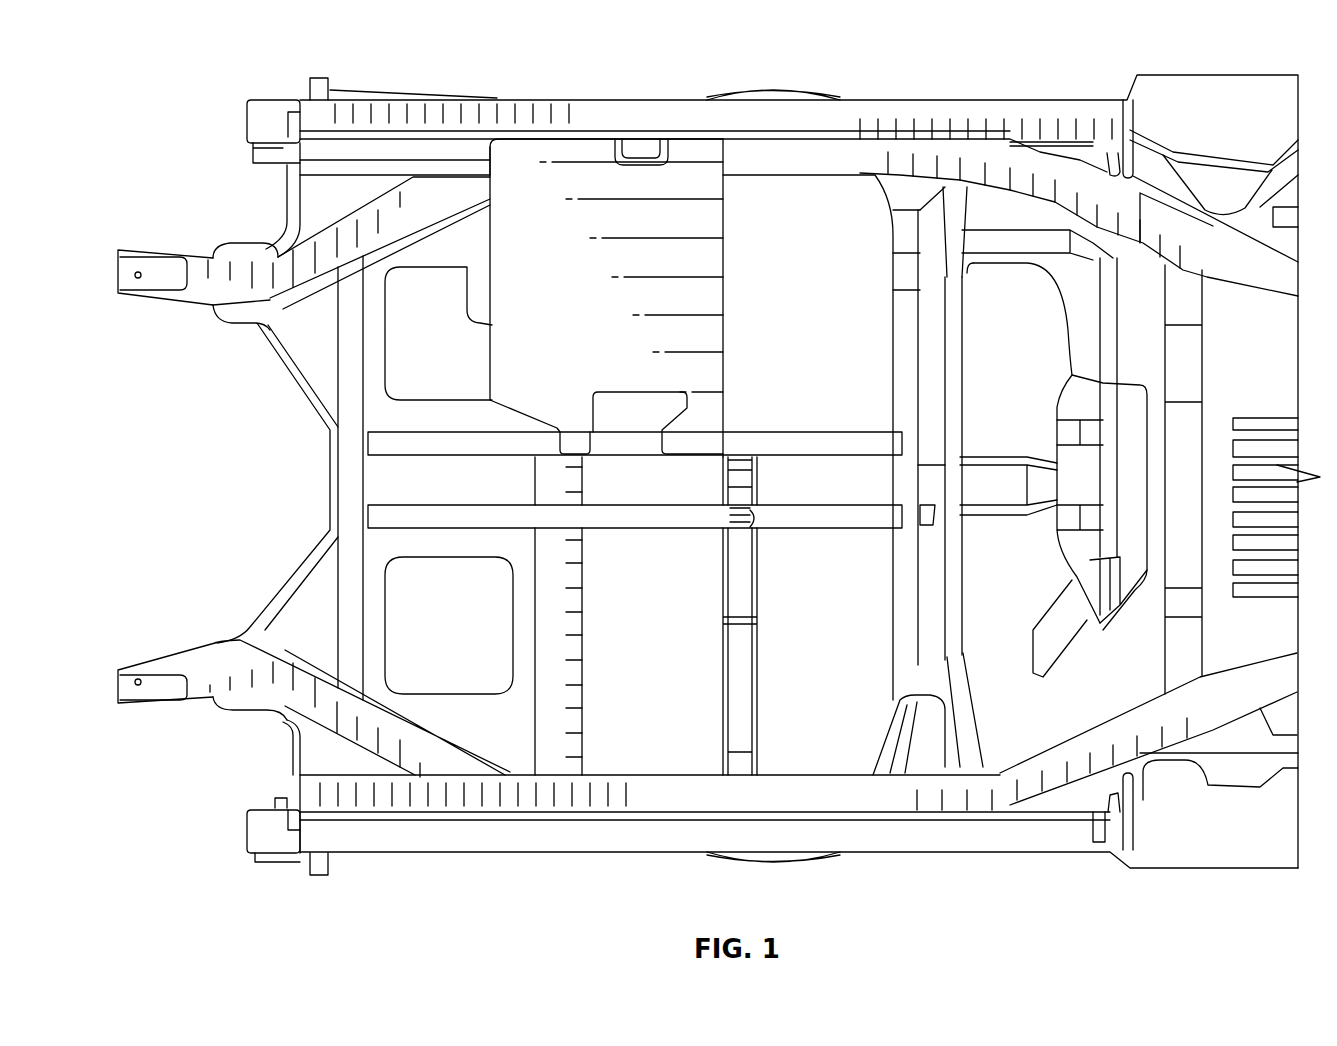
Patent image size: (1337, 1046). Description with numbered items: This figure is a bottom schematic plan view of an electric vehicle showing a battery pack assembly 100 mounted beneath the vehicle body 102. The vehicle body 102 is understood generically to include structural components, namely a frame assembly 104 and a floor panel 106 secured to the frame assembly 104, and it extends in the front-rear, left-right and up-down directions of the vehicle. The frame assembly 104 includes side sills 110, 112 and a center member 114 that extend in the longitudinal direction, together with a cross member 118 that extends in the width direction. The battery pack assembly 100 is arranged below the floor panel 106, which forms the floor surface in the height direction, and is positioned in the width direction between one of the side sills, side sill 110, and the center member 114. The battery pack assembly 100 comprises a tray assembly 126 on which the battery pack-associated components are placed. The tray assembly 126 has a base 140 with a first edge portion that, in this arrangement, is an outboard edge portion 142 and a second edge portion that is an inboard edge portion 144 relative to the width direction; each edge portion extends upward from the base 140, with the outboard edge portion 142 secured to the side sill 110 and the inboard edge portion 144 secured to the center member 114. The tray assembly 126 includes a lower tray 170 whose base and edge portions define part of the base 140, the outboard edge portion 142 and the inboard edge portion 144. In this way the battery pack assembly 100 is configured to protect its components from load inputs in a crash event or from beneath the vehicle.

The battery pack assembly 100 is at (790, 333).
The vehicle body 102 is at (998, 75).
The frame assembly 104 is at (487, 862).
The floor panel 106 is at (653, 757).
The side sill 110 is at (803, 158).
The side sill 112 is at (810, 783).
The center member 114 is at (812, 445).
The cross member 118 is at (565, 698).
The tray assembly 126 is at (521, 163).
The base 140 is at (707, 307).
The outboard edge portion 142 is at (585, 173).
The inboard edge portion 144 is at (707, 418).
The lower tray 170 is at (490, 343).